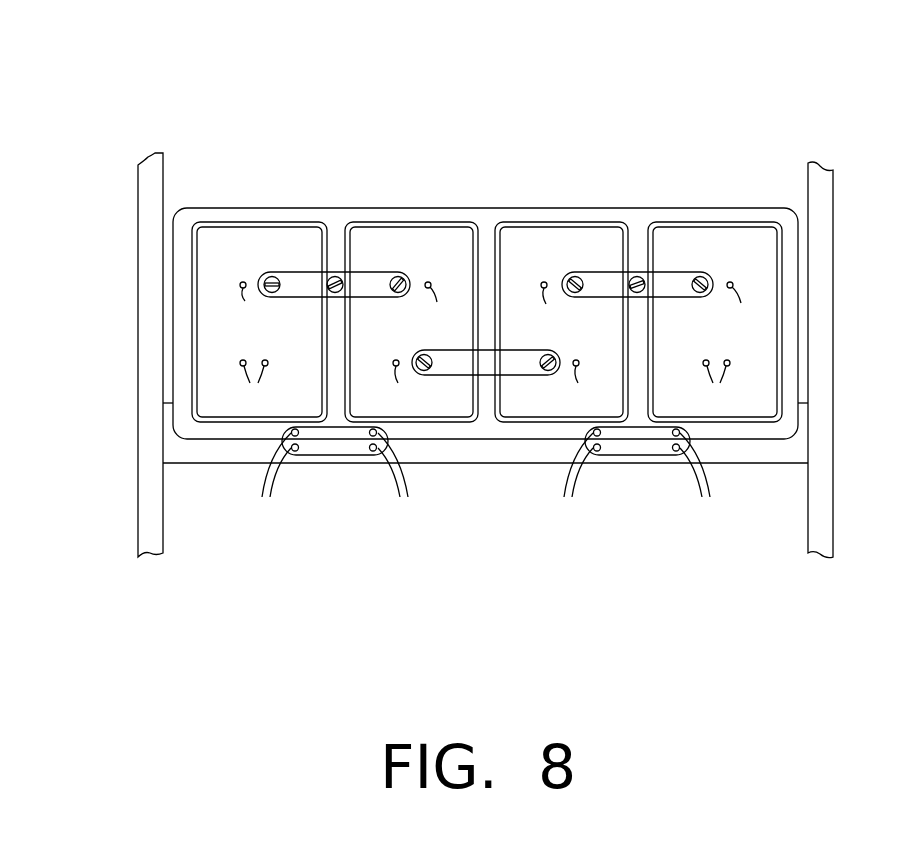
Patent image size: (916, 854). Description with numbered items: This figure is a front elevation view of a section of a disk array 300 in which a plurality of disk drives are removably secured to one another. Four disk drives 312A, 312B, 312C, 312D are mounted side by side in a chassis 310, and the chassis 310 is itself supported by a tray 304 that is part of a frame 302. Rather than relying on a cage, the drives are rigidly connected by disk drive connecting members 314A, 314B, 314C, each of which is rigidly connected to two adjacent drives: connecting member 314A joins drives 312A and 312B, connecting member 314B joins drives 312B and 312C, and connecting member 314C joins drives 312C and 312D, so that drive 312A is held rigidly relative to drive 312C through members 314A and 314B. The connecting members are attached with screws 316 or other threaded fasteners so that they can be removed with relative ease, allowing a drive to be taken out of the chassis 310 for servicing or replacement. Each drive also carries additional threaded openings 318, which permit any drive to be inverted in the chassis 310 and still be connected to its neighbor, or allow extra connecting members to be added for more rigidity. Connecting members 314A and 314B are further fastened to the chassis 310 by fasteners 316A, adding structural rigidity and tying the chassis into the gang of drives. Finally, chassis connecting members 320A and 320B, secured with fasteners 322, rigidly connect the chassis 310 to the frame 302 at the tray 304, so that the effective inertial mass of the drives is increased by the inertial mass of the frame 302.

The disk array 300 is at (560, 93).
The frame 302 is at (150, 287).
The tray 304 is at (203, 453).
The chassis 310 is at (183, 341).
The disk drive 312A is at (240, 242).
The disk drive 312B is at (447, 244).
The disk drive 312C is at (548, 243).
The disk drive 312D is at (760, 247).
The disk drive connecting member 314A is at (373, 283).
The disk drive connecting member 314B is at (486, 368).
The disk drive connecting member 314C is at (677, 283).
The screws 316 is at (280, 277).
The fasteners 316A is at (335, 276).
The threaded openings 318 is at (494, 350).
The chassis connecting member 320A is at (335, 447).
The chassis connecting member 320B is at (637, 447).
The fasteners 322 is at (484, 482).